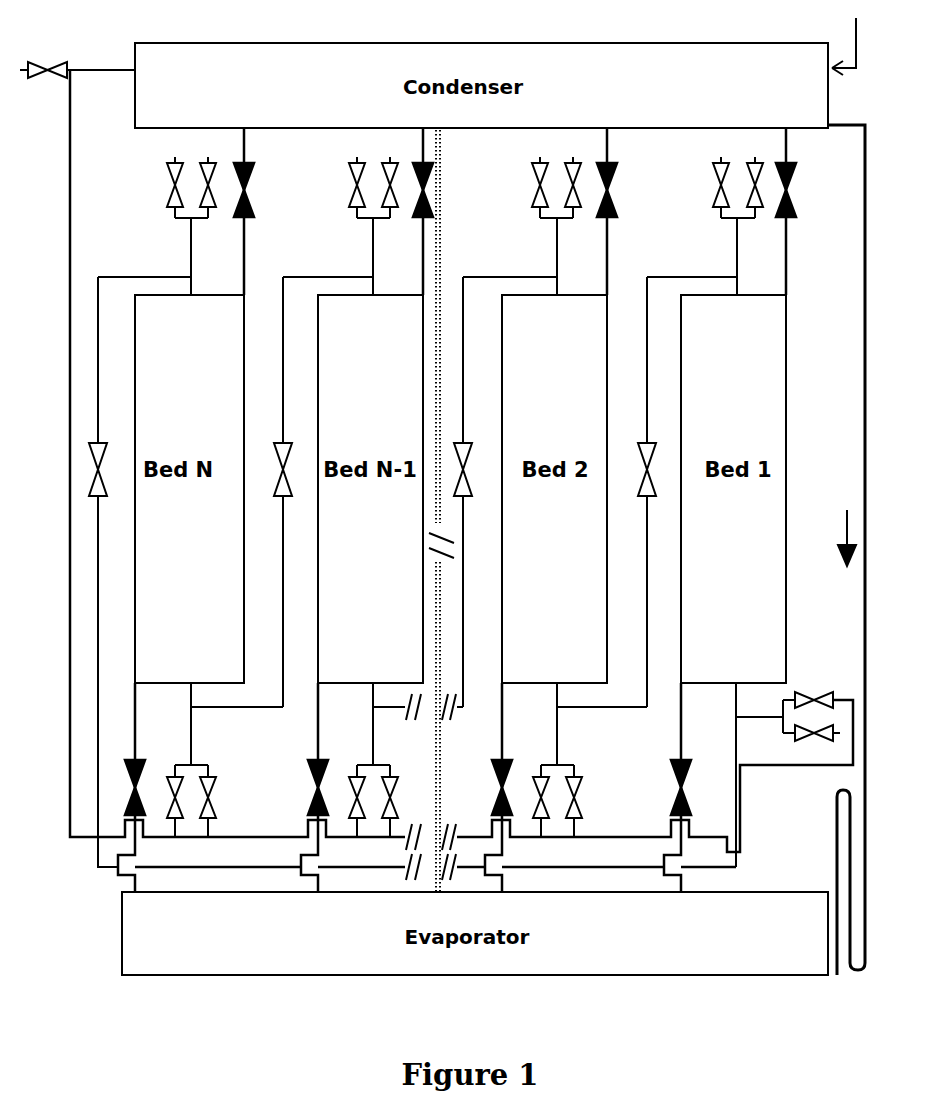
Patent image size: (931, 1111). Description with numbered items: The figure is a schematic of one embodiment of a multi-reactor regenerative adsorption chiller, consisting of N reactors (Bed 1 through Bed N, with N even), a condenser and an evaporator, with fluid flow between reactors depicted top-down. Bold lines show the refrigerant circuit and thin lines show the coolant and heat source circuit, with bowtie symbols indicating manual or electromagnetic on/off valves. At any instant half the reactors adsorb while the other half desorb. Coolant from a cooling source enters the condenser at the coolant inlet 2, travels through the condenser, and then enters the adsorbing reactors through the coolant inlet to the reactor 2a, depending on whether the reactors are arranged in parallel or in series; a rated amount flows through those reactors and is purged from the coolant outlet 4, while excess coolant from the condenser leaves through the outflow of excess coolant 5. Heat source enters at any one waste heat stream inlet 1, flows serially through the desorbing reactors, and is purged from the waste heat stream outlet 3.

The waste heat stream inlet 1 is at (505, 768).
The coolant inlet to the reactor 2a is at (526, 753).
The waste heat stream outlet 3 is at (447, 180).
The coolant outlet 4 is at (481, 180).
The outflow of excess coolant 5 is at (77, 49).
The coolant inlet 2 is at (844, 46).